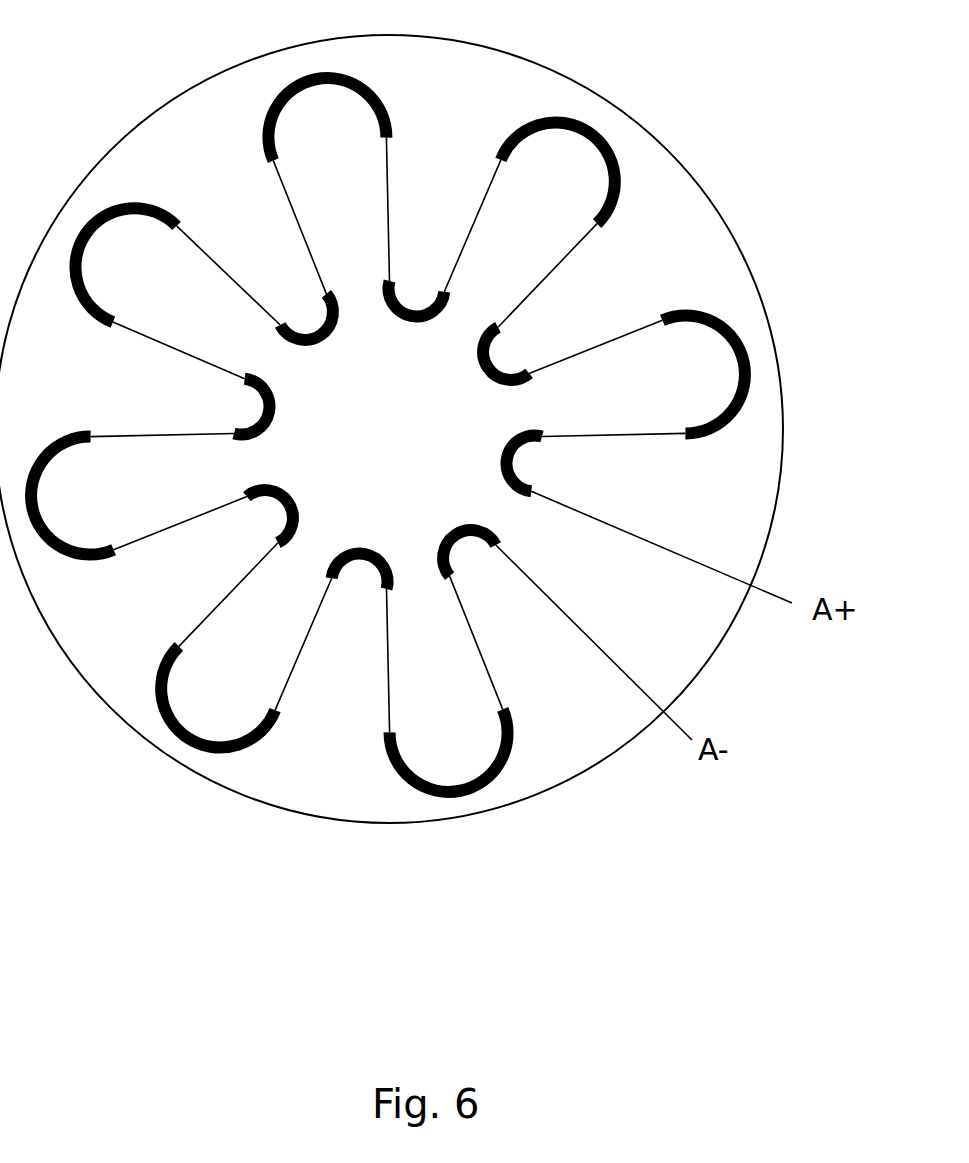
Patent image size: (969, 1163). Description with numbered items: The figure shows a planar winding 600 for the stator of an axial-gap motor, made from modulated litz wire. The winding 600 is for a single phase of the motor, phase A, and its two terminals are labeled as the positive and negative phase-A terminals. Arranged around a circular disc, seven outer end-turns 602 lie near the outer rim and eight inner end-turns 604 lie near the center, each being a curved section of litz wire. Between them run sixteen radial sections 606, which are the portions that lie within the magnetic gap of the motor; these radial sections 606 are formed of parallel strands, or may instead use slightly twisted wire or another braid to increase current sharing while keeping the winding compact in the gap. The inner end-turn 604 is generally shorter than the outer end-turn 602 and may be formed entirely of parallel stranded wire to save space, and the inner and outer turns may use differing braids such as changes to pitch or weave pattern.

The planar winding 600 is at (653, 231).
The outer end-turn 602 is at (92, 205).
The inner end-turn 604 is at (305, 515).
The radial section 606 is at (312, 658).